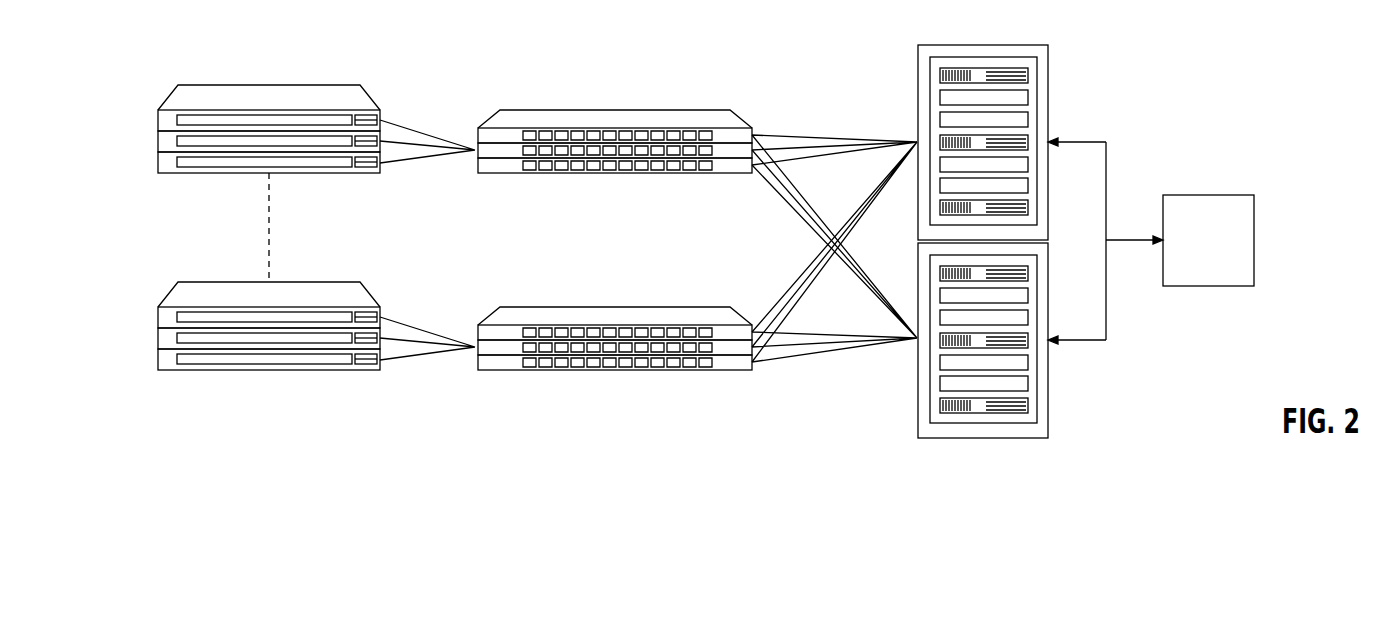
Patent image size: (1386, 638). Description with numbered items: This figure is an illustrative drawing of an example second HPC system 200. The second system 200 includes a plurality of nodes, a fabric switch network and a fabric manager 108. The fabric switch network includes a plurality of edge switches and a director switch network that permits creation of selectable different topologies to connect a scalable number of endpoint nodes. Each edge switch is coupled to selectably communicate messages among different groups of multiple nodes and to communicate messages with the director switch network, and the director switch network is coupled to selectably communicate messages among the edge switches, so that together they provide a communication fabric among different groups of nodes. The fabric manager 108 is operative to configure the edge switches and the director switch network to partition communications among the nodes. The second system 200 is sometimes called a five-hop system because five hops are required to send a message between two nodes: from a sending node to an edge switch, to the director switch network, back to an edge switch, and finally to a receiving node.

The fabric manager 108 is at (1255, 240).
The second HPC system 200 is at (707, 232).